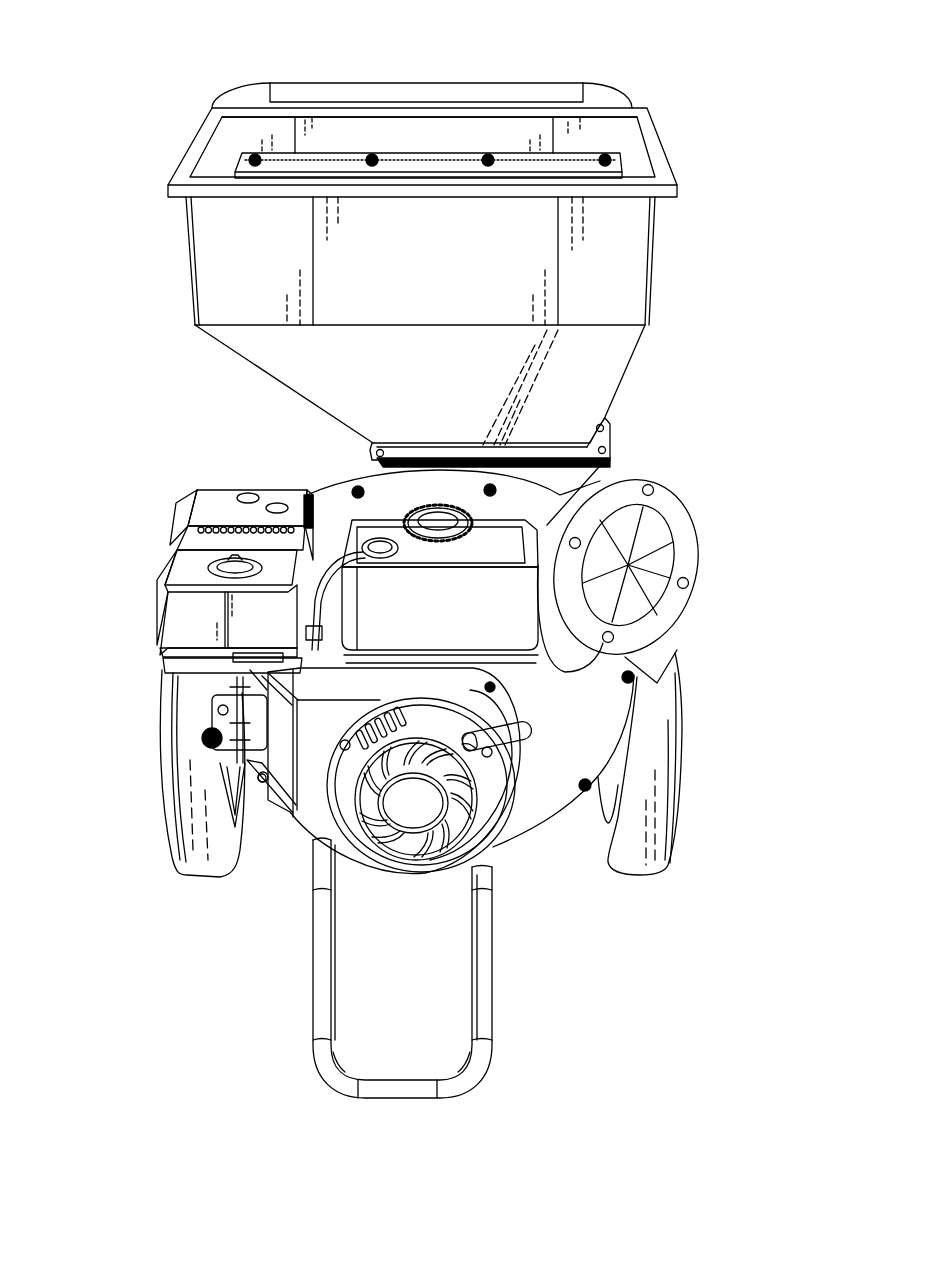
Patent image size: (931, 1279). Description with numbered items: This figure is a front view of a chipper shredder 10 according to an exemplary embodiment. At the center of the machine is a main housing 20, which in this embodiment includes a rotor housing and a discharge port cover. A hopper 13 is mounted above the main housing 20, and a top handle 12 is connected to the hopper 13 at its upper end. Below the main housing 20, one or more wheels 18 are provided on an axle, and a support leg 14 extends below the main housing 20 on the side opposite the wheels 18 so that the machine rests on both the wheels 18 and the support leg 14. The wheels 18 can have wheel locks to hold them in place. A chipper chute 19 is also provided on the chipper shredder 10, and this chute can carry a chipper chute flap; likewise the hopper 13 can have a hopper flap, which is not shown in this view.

The chipper shredder 10 is at (724, 212).
The top handle 12 is at (563, 87).
The hopper 13 is at (205, 278).
The support leg 14 is at (450, 1087).
The wheels 18 is at (177, 843).
The chipper chute 19 is at (685, 555).
The main housing 20 is at (597, 482).